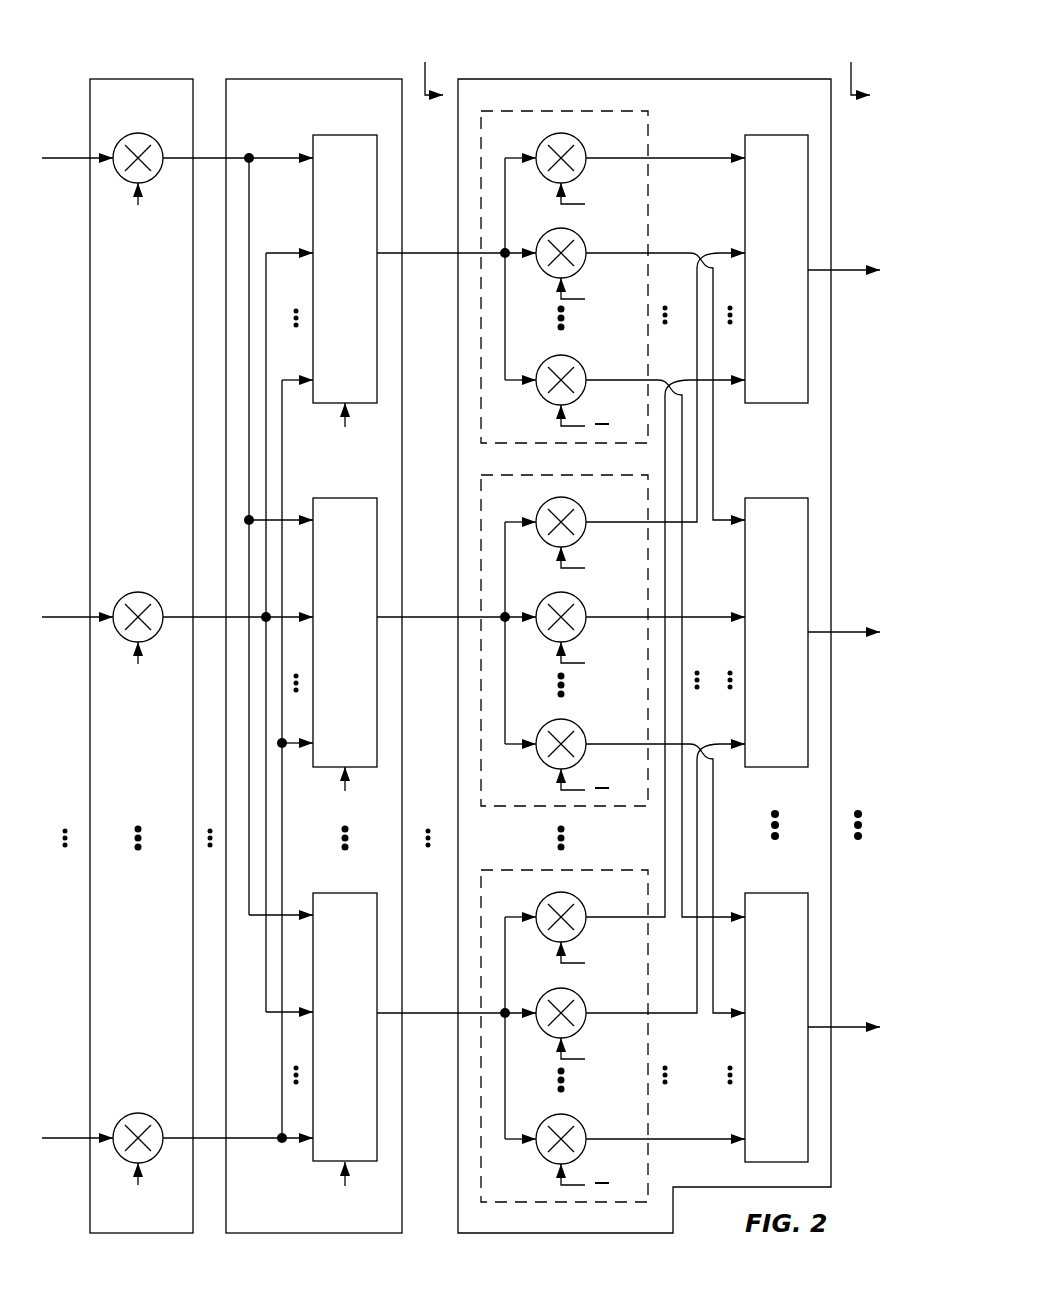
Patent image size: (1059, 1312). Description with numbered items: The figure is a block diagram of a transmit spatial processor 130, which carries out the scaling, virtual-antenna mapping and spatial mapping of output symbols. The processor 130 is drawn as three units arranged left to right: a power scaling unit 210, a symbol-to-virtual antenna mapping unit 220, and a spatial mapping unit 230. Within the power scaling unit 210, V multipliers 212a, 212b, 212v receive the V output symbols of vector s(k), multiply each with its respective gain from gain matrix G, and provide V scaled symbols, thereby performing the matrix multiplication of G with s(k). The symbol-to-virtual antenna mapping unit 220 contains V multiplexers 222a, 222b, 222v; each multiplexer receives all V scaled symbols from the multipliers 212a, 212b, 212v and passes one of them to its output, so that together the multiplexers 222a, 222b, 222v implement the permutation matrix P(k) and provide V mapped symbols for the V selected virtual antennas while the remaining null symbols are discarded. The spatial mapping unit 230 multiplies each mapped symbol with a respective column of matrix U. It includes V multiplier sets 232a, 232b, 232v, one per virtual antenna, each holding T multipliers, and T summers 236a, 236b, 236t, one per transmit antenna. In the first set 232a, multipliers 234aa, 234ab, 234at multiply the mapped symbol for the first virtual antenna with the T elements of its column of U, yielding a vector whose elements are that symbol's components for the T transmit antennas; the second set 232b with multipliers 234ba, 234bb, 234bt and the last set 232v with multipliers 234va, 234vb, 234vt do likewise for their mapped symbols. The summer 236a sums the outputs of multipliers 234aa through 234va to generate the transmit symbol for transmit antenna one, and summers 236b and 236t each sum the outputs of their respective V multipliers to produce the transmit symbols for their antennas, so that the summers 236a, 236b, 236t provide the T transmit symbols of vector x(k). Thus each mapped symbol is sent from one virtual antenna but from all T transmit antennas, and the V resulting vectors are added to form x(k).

The TX spatial processor 130 is at (88, 44).
The power scaling unit 210 is at (140, 79).
The multiplier 212a is at (134, 134).
The multiplier 212b is at (134, 593).
The multiplier 212v is at (134, 1114).
The symbol-to-virtual antenna mapping unit 220 is at (310, 79).
The multiplexer 222a is at (340, 135).
The multiplexer 222b is at (340, 498).
The multiplexer 222v is at (340, 893).
The spatial mapping unit 230 is at (642, 79).
The multiplier set 232a is at (519, 112).
The multiplier set 232b is at (519, 476).
The multiplier set 232v is at (519, 870).
The multiplier 234aa is at (579, 140).
The multiplier 234ab is at (579, 235).
The multiplier 234at is at (579, 362).
The multiplier 234ba is at (579, 504).
The multiplier 234bb is at (579, 599).
The multiplier 234bt is at (579, 726).
The multiplier 234va is at (579, 899).
The multiplier 234vb is at (579, 995).
The multiplier 234vt is at (579, 1121).
The summer 236a is at (770, 135).
The summer 236b is at (770, 498).
The summer 236t is at (770, 893).